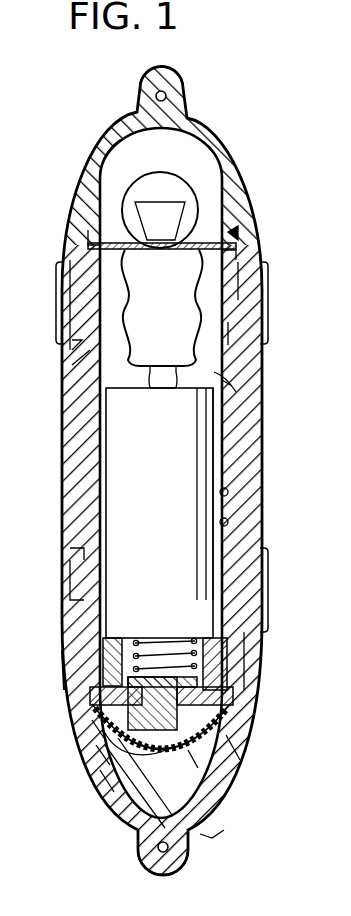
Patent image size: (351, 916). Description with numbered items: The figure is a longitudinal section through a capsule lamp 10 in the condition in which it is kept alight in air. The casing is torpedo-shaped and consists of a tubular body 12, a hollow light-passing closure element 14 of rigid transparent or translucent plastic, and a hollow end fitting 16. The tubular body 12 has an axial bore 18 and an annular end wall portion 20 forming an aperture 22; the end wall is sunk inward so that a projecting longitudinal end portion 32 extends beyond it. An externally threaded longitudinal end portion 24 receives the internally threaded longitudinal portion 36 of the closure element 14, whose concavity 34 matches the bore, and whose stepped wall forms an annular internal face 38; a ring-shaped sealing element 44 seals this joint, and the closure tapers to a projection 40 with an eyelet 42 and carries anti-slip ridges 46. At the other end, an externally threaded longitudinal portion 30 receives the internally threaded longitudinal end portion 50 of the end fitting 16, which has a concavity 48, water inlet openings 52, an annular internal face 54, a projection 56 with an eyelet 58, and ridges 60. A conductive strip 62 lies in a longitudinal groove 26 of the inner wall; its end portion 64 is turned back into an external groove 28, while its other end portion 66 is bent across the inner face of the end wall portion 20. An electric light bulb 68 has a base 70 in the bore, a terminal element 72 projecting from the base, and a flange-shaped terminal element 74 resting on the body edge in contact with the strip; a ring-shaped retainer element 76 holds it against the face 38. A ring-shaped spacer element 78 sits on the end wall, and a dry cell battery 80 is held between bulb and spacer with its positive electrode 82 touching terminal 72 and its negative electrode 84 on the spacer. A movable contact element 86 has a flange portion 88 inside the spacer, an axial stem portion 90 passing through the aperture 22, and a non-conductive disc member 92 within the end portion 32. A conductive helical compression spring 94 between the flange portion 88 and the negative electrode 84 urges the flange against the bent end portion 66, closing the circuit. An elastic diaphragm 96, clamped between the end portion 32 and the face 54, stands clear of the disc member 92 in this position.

The capsule lamp 10 is at (262, 458).
The tubular body 12 is at (62, 460).
The closure element 14 is at (100, 140).
The end fitting 16 is at (63, 672).
The axial bore 18 is at (98, 380).
The annular end wall portion 20 is at (72, 703).
The aperture 22 is at (157, 752).
The externally threaded longitudinal end portion 24 is at (70, 302).
The longitudinal groove 26 is at (228, 492).
The external groove 28 is at (268, 297).
The externally threaded longitudinal portion 30 is at (70, 554).
The projecting longitudinal end portion 32 is at (92, 727).
The concavity 34 is at (100, 175).
The internally threaded longitudinal portion 36 is at (72, 327).
The annular internal face 38 is at (88, 230).
The projection 40 is at (150, 96).
The eyelet 42 is at (166, 94).
The ring-shaped sealing element 44 is at (68, 372).
The spaced parallel ridges 46 is at (66, 352).
The concavity 48 is at (140, 800).
The internally threaded longitudinal end portion 50 is at (72, 581).
The water inlet openings 52 is at (96, 772).
The annular internal face 54 is at (92, 750).
The projection 56 is at (138, 862).
The eyelet 58 is at (185, 862).
The spaced parallel ridges 60 is at (62, 606).
The conductive strip 62 is at (228, 522).
The end portion 64 is at (242, 270).
The end portion 66 is at (228, 686).
The electric light bulb 68 is at (195, 172).
The base 70 is at (232, 322).
The terminal element 72 is at (234, 382).
The terminal element 74 is at (238, 236).
The ring-shaped retainer element 76 is at (240, 252).
The ring-shaped spacer element 78 is at (206, 660).
The dry cell battery 80 is at (159, 513).
The positive electrode 82 is at (218, 402).
The negative electrode 84 is at (248, 634).
The movable contact element 86 is at (225, 836).
The flange portion 88 is at (234, 706).
The axial stem portion 90 is at (180, 728).
The disc member 92 is at (228, 746).
The helical compression spring 94 is at (104, 648).
The diaphragm 96 is at (236, 765).